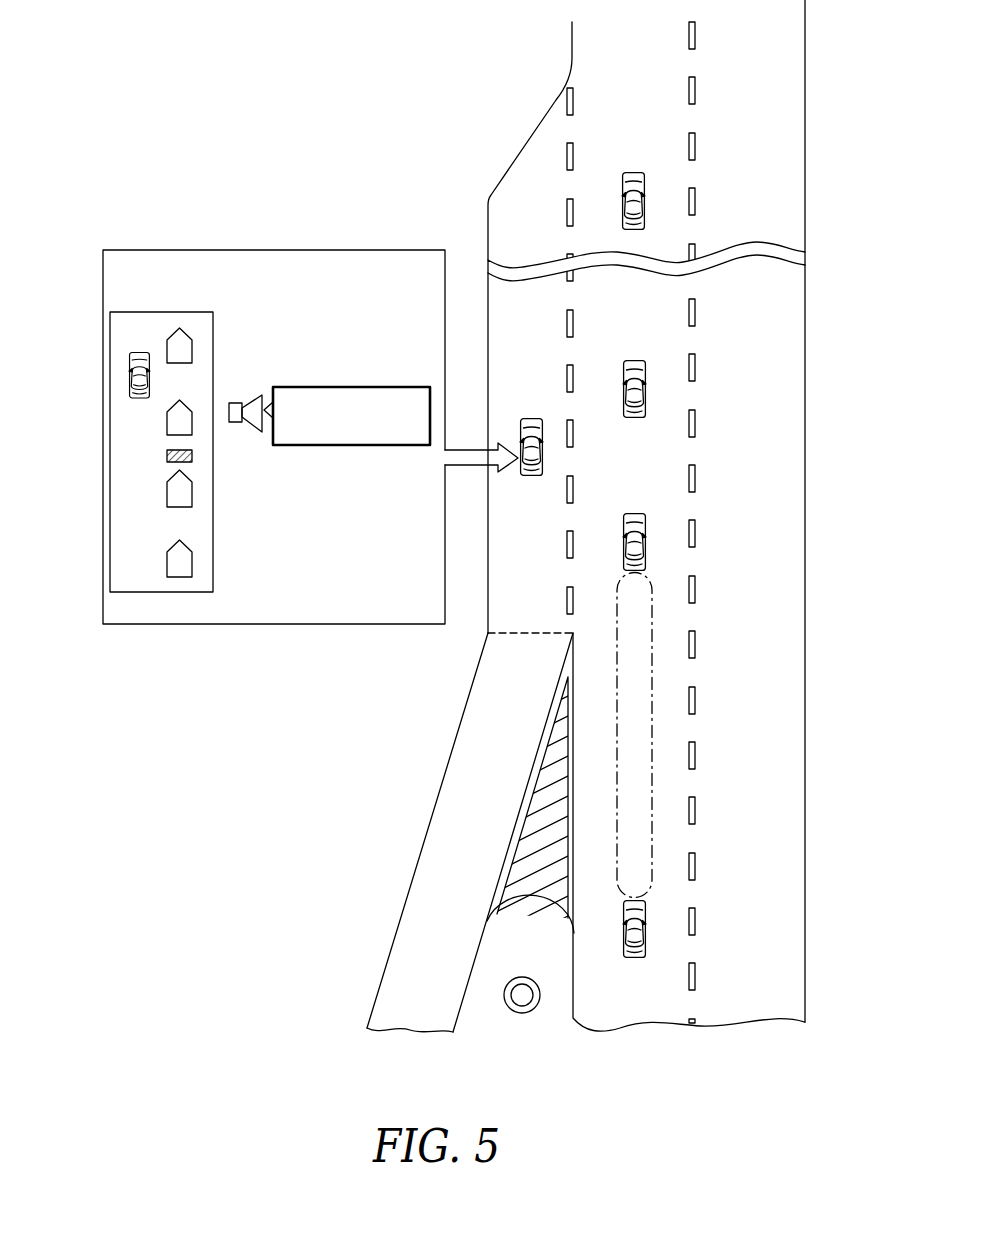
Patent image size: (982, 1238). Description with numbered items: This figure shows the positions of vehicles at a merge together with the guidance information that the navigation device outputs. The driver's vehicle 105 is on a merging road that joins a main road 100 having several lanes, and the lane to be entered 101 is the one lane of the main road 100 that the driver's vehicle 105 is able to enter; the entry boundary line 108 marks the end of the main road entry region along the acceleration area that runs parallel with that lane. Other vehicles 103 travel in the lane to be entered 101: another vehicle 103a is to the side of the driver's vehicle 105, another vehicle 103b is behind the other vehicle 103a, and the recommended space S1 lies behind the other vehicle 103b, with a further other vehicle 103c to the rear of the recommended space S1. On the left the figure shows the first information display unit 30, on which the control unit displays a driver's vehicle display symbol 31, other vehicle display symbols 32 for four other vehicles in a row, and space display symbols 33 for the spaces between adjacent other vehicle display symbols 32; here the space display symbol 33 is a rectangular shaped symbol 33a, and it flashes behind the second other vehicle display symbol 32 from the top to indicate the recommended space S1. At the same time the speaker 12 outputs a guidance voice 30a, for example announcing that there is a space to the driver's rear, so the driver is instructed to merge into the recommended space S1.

The speaker 12 is at (239, 403).
The first information display unit 30 is at (169, 312).
The guidance voice 30a is at (380, 447).
The driver's vehicle display symbol 31 is at (130, 377).
The other vehicle display symbols 32 is at (167, 340).
The space display symbols 33 is at (241, 481).
The rectangular shaped symbol 33a is at (192, 455).
The main road 100 is at (782, 617).
The lane to be entered 101 is at (665, 448).
The other vehicles 103 is at (633, 172).
The other vehicle 103a is at (633, 360).
The other vehicle 103b is at (633, 513).
The other vehicle 103c is at (633, 958).
The driver's vehicle 105 is at (530, 418).
The entry boundary line 108 is at (519, 633).
The recommended space S1 is at (652, 728).